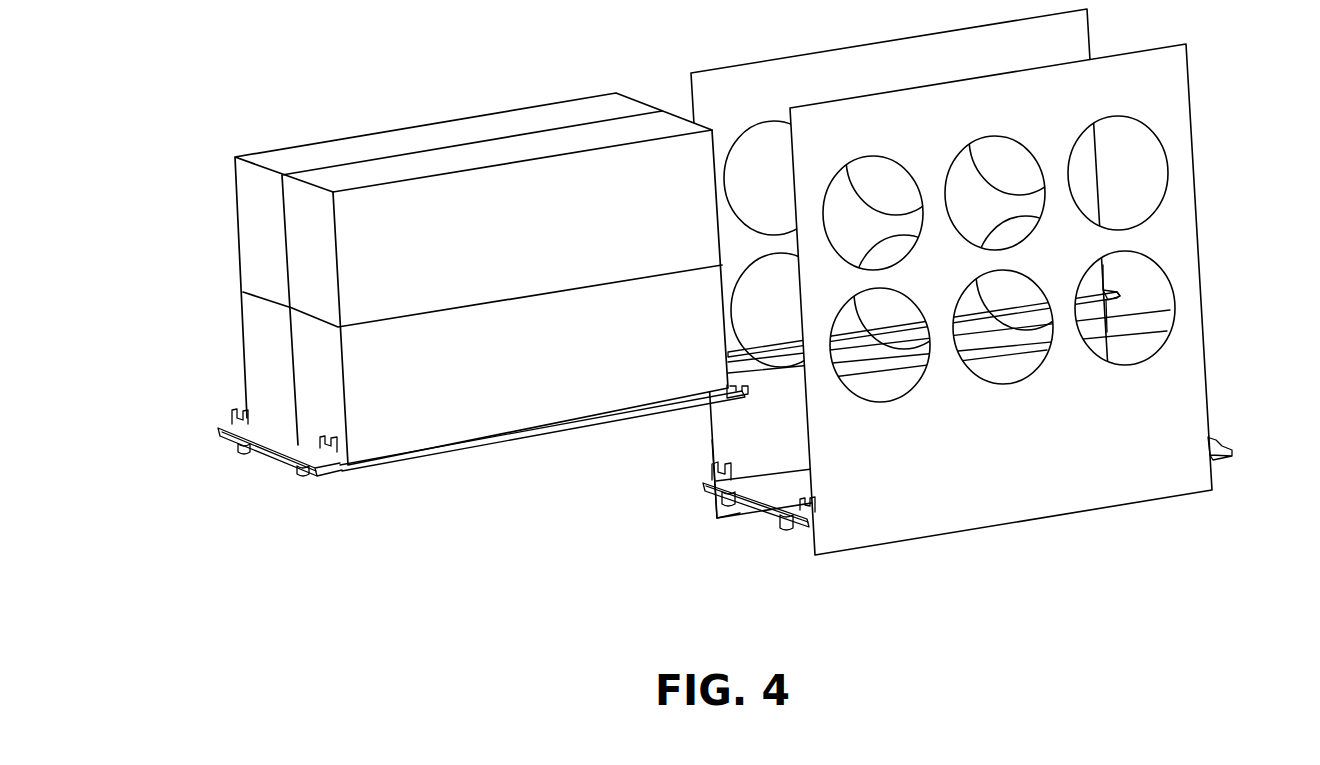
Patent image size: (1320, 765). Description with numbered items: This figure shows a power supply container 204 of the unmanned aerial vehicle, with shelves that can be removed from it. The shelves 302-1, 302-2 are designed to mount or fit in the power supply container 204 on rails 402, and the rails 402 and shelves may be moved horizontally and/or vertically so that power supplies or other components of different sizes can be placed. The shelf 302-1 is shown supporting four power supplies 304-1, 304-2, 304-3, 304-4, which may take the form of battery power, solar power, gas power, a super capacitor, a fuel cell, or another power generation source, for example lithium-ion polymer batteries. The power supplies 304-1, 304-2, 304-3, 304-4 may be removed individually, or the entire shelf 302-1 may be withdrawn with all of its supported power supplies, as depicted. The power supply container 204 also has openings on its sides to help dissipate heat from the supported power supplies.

The power supply container 204 is at (1170, 93).
The rail 402 is at (1117, 345).
The power supply 304-1 is at (263, 197).
The power supply 304-2 is at (266, 351).
The power supply 304-3 is at (311, 197).
The power supply 304-4 is at (417, 423).
The shelf 302-1 is at (275, 452).
The shelf 302-2 is at (760, 520).